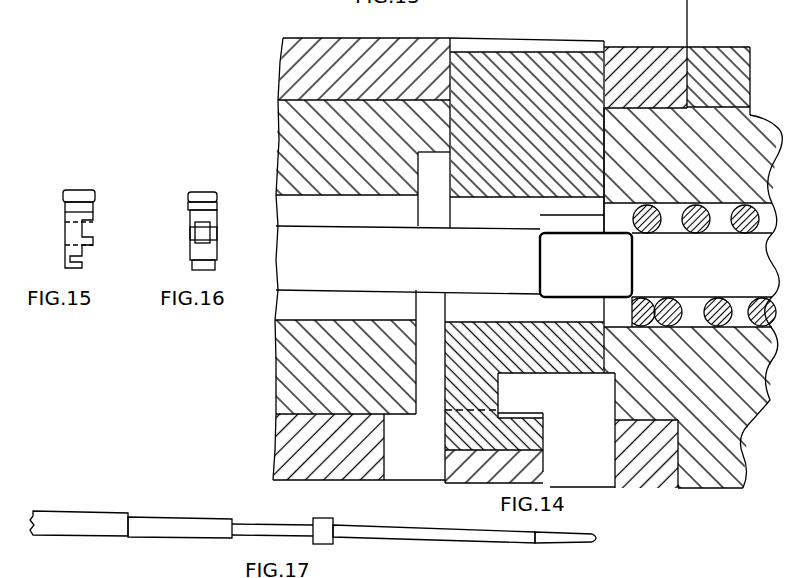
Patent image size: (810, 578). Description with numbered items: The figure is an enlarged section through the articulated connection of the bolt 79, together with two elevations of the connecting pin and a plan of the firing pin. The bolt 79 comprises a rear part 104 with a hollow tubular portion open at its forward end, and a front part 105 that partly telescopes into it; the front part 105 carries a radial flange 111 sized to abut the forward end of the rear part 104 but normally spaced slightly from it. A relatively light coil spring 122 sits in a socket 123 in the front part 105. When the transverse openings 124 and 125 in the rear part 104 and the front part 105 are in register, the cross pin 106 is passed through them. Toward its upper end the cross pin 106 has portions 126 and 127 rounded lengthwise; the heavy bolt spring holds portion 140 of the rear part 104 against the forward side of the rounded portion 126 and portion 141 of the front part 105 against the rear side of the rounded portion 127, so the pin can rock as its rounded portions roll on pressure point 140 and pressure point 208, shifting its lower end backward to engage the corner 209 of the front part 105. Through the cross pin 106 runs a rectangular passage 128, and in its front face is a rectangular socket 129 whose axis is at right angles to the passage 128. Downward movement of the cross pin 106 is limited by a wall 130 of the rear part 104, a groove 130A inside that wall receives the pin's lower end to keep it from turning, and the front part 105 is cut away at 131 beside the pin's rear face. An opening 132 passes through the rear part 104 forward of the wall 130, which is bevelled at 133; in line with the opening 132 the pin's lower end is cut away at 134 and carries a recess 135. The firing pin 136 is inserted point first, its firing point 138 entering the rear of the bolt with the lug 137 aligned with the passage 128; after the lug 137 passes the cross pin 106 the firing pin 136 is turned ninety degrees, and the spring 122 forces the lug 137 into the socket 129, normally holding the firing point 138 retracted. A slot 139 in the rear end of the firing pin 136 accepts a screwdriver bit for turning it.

In FIG. 14, the bolt 79 is at (279, 62).
In FIG. 14, the rear part 104 is at (323, 46).
In FIG. 14, the front part 105 is at (752, 133).
In FIG. 14, the cross pin 106 is at (527, 72).
In FIG. 15, the cross pin 106 is at (77, 219).
In FIG. 16, the cross pin 106 is at (204, 218).
In FIG. 14, the radial flange 111 is at (706, 47).
In FIG. 14, the coil spring 122 is at (673, 314).
In FIG. 14, the socket 123 is at (716, 228).
In FIG. 14, the transverse opening 124 is at (452, 58).
In FIG. 14, the transverse opening 125 is at (607, 140).
In FIG. 15, the rounded portion 126 is at (80, 193).
In FIG. 16, the rounded portion 126 is at (202, 195).
In FIG. 15, the rounded portion 127 is at (67, 203).
In FIG. 16, the rounded portion 127 is at (217, 205).
In FIG. 14, the rectangular passage 128 is at (462, 208).
In FIG. 15, the rectangular passage 128 is at (65, 247).
In FIG. 16, the rectangular passage 128 is at (203, 243).
In FIG. 14, the rectangular socket 129 is at (540, 222).
In FIG. 15, the rectangular socket 129 is at (93, 233).
In FIG. 16, the rectangular socket 129 is at (210, 232).
In FIG. 14, the wall 130 is at (457, 470).
In FIG. 14, the groove 130A is at (547, 423).
In FIG. 14, the cut-away 131 is at (417, 350).
In FIG. 14, the opening 132 is at (593, 484).
In FIG. 14, the bevel 133 is at (543, 472).
In FIG. 14, the cut-away 134 is at (585, 368).
In FIG. 14, the recess 135 is at (530, 400).
In FIG. 14, the firing pin 136 is at (296, 272).
In FIG. 17, the firing pin 136 is at (323, 520).
In FIG. 14, the lug 137 is at (595, 267).
In FIG. 17, the lug 137 is at (322, 519).
In FIG. 17, the firing point 138 is at (567, 541).
In FIG. 17, the slot 139 is at (28, 522).
In FIG. 14, the pressure point 140 is at (607, 77).
In FIG. 14, the portion 141 is at (443, 127).
In FIG. 14, the pressure point 208 is at (607, 140).
In FIG. 14, the corner 209 is at (416, 403).